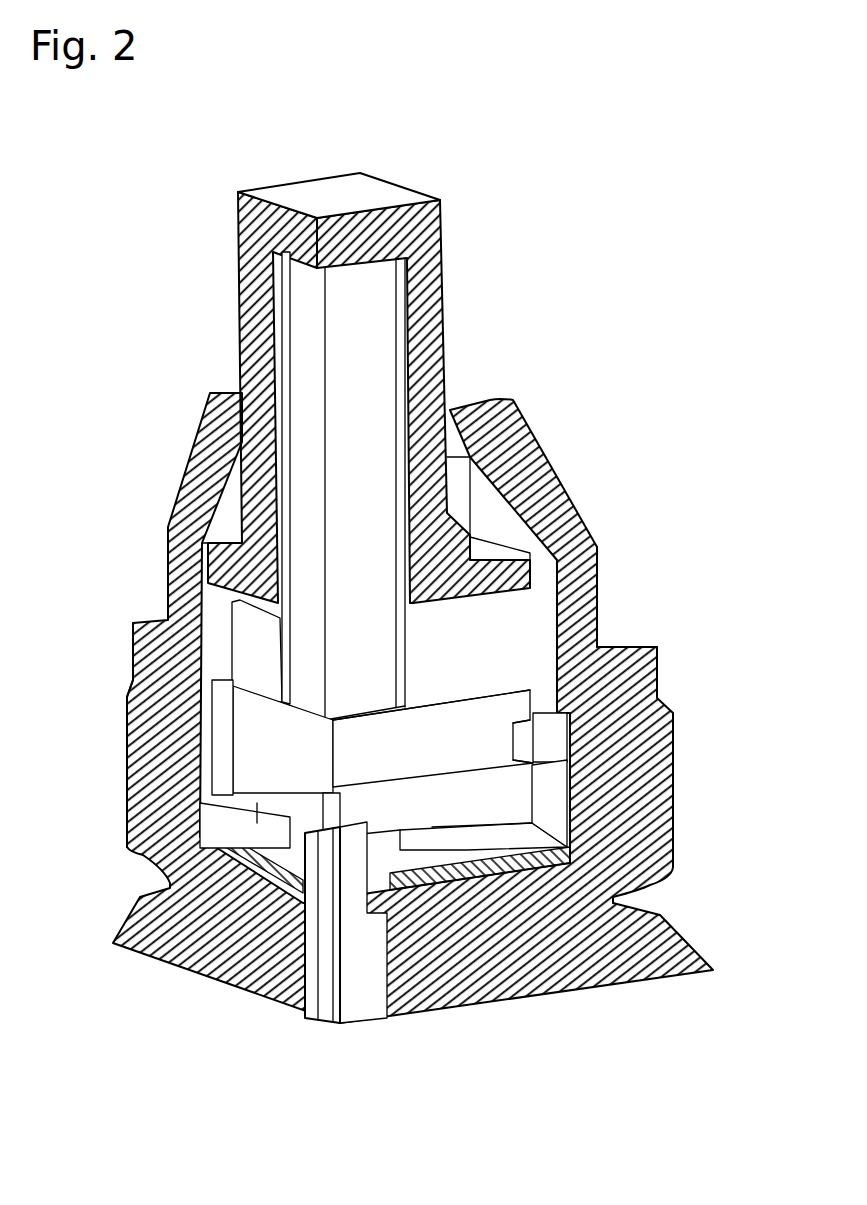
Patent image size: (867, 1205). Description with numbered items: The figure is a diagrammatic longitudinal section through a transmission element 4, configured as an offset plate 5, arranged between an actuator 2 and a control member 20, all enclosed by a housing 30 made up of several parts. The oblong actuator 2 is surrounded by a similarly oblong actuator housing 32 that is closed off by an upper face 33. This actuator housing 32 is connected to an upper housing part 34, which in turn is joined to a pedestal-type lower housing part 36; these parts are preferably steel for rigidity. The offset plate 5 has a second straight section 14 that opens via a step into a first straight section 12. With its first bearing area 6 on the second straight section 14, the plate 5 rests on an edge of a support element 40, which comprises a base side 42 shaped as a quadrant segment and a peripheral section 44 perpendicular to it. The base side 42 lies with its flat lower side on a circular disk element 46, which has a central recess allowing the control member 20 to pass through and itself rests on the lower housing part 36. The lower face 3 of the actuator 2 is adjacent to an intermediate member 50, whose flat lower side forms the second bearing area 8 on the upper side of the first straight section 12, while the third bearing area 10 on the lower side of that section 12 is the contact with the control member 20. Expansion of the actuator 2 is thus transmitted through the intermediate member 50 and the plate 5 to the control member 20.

The actuator 2 is at (287, 283).
The lower face 3 is at (377, 708).
The transmission element 4 is at (452, 792).
The offset plate 5 is at (431, 705).
The first bearing area 6 is at (560, 762).
The second bearing area 8 is at (510, 765).
The third bearing area 10 is at (325, 825).
The first straight section 12 is at (360, 803).
The second straight section 14 is at (515, 740).
The control member 20 is at (355, 1008).
The housing 30 is at (560, 430).
The actuator housing 32 is at (445, 232).
The tube top 33 is at (398, 188).
The upper housing part 34 is at (597, 592).
The lower housing part 36 is at (127, 763).
The support element 40 is at (488, 843).
The base side 42 is at (245, 805).
The peripheral section 44 is at (540, 800).
The circular disk element 46 is at (250, 822).
The intermediate member 50 is at (295, 722).